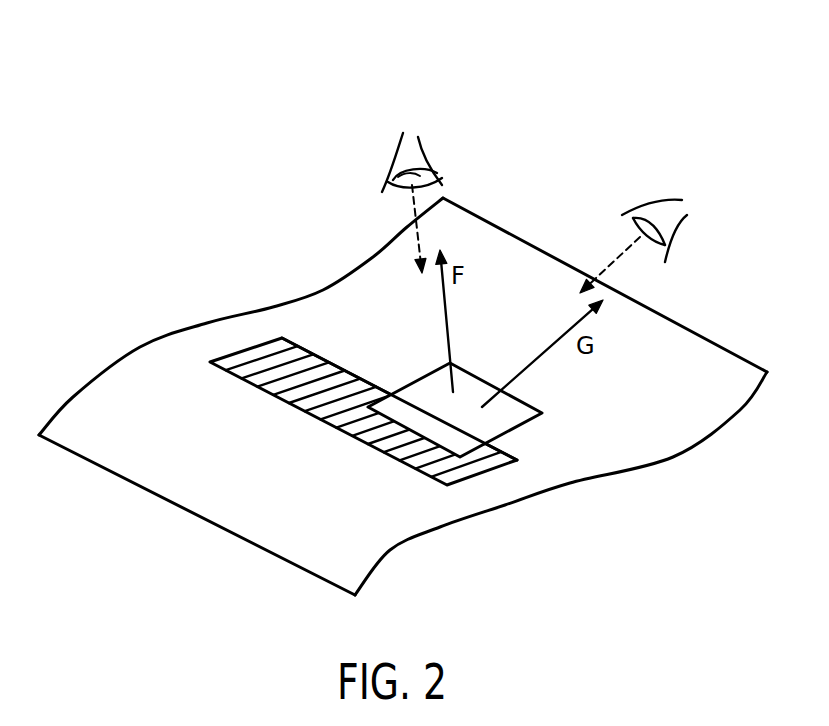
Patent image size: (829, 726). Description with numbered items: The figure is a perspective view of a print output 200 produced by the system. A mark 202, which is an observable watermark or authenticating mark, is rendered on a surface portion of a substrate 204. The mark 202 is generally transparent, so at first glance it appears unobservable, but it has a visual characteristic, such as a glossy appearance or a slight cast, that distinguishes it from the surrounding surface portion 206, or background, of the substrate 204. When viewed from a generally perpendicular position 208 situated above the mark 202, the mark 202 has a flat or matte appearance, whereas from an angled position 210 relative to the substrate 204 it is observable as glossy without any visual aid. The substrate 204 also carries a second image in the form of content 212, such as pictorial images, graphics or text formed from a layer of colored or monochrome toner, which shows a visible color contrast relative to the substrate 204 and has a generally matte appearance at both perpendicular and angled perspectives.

The print output 200 is at (141, 159).
The mark 202 is at (540, 413).
The substrate 204 is at (700, 332).
The surrounding surface portion 206 is at (336, 516).
The perpendicular position 208 is at (427, 155).
The angled position 210 is at (677, 232).
The content 212 is at (243, 380).